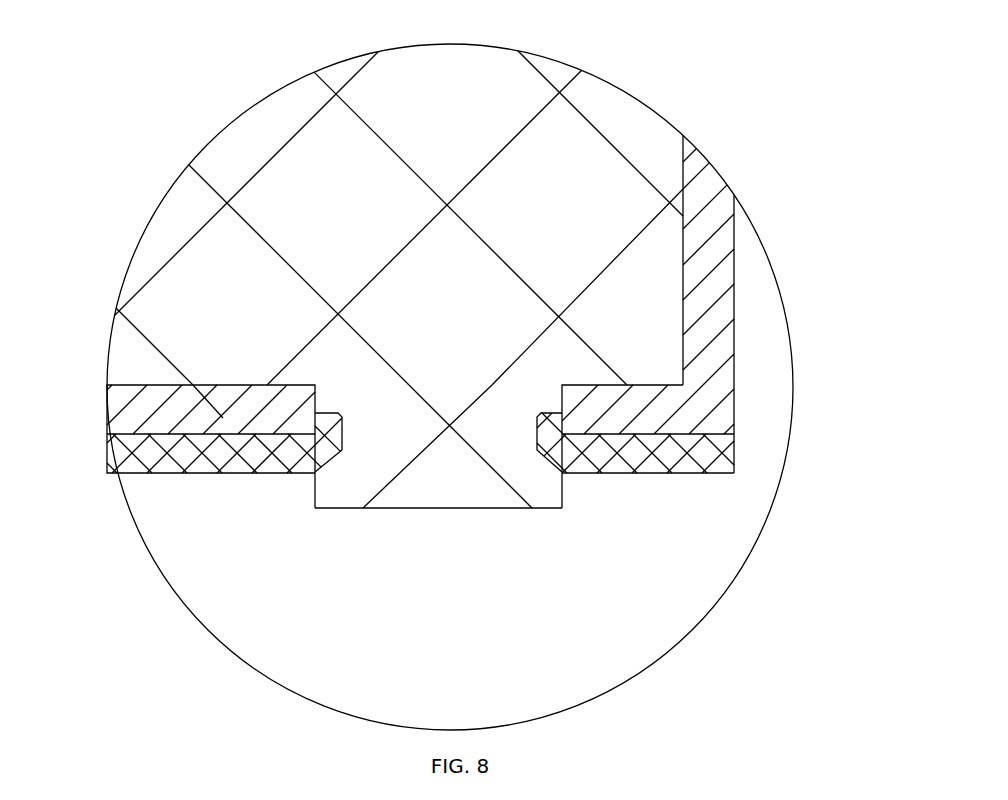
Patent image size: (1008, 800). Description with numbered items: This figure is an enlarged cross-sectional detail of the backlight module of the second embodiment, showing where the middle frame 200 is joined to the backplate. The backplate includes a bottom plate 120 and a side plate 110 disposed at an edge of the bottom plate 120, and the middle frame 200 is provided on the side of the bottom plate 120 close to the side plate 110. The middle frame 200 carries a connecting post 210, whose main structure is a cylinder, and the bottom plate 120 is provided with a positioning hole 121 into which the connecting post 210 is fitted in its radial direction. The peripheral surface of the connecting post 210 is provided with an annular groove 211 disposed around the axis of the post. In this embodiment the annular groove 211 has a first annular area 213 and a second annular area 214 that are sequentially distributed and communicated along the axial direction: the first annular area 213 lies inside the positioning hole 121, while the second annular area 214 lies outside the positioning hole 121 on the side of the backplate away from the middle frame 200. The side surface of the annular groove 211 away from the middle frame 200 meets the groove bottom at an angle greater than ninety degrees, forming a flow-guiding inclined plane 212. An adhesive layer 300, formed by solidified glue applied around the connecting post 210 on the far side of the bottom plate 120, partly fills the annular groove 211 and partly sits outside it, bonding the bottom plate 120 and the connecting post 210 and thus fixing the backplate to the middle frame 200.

The middle frame 200 is at (240, 247).
The side plate 110 is at (707, 290).
The bottom plate 120 is at (190, 386).
The positioning hole 121 is at (314, 416).
The adhesive layer 300 is at (142, 472).
The connecting post 210 is at (562, 438).
The annular groove 211 is at (560, 436).
The flow-guiding inclined plane 212 is at (562, 473).
The first annular area 213 is at (268, 384).
The second annular area 214 is at (317, 473).